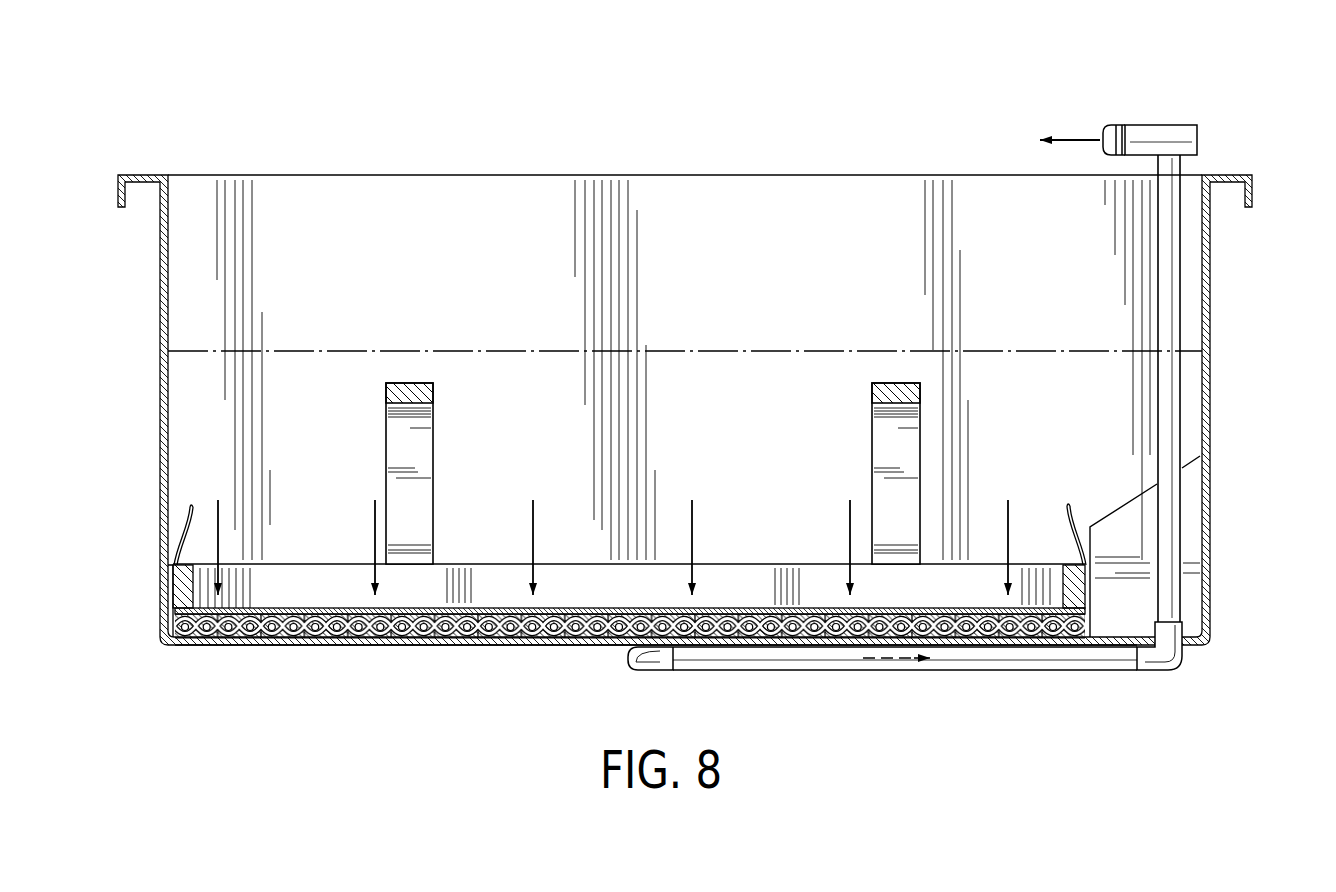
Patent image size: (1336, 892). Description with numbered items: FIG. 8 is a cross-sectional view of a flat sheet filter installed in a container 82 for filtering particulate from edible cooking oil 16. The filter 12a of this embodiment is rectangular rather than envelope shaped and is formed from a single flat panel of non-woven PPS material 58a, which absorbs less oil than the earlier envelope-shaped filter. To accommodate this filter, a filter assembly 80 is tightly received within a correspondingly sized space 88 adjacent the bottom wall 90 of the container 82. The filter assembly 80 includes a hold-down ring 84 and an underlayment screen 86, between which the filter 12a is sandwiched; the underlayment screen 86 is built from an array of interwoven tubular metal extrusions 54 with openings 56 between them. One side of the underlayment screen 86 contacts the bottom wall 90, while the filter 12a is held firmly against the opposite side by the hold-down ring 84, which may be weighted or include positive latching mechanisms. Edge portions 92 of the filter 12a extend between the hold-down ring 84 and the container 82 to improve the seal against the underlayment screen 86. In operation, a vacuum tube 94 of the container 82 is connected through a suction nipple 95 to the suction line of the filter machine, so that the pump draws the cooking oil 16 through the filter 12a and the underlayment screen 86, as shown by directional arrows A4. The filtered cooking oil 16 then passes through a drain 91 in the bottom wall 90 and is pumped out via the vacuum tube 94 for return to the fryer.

The container 82 is at (1252, 174).
The edible cooking oil 16 is at (750, 348).
The hold-down ring 84 is at (383, 422).
The filter assembly 80 is at (673, 489).
The panel of non-woven PPS material 58a is at (738, 607).
The filter 12a is at (307, 606).
The interwoven tubular metal extrusions 54 is at (447, 633).
The openings 56 is at (366, 631).
The bottom wall 90 is at (538, 640).
The underlayment screen 86 is at (170, 633).
The space 88 is at (205, 596).
The edge portions 92 is at (190, 511).
The drain 91 is at (630, 649).
The vacuum tube 94 is at (1113, 656).
The suction nipple 95 is at (1181, 135).
The directional arrows A4 is at (1068, 140).